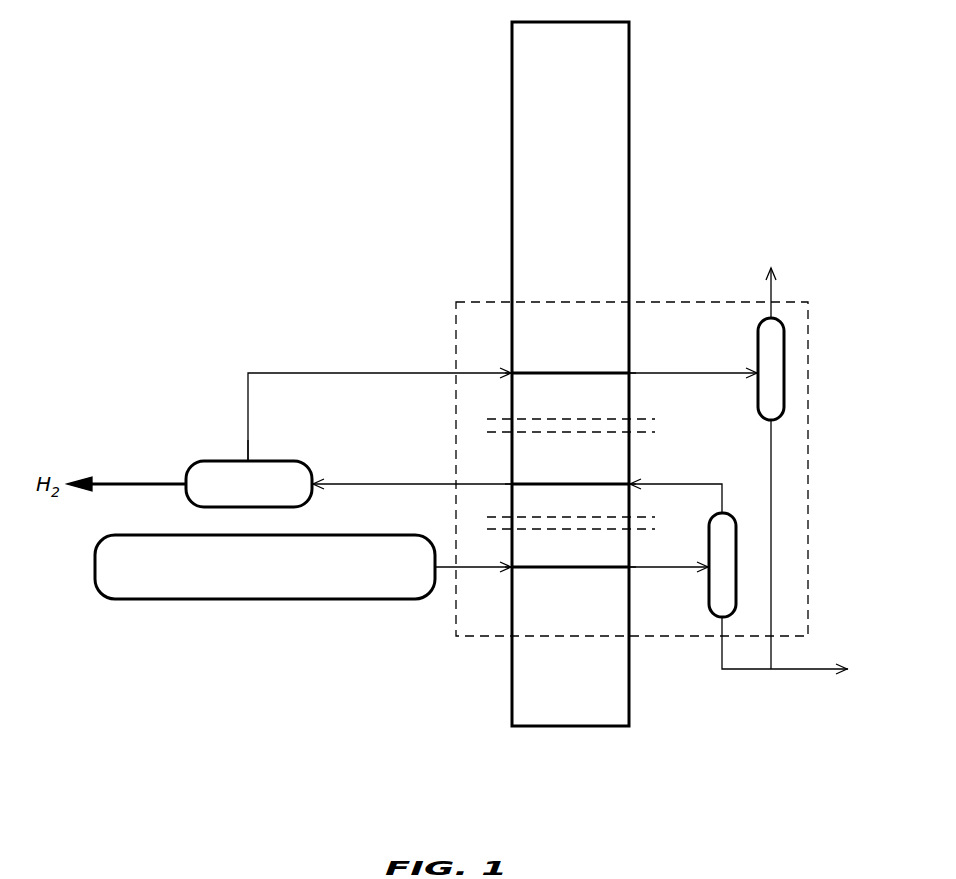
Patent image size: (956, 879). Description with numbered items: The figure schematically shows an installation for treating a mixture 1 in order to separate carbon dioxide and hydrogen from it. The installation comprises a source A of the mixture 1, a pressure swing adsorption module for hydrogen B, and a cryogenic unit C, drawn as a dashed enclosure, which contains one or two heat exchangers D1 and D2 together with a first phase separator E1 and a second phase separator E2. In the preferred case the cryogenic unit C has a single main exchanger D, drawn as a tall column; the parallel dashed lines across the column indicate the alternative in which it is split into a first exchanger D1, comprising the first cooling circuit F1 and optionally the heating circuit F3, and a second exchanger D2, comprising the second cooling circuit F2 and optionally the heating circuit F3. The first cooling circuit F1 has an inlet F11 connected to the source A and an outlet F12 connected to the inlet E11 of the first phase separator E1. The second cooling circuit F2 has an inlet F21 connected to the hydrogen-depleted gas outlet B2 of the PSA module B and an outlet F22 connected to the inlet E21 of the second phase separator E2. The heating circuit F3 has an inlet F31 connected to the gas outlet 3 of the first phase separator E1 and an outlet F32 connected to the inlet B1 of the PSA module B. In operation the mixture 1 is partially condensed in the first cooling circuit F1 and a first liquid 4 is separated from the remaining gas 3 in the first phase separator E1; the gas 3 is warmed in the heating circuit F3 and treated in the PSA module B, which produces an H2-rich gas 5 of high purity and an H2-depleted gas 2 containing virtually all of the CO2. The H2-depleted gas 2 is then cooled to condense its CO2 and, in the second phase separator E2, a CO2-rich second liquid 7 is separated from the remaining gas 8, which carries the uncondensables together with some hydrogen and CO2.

The mixture 1 is at (450, 570).
The hydrogen-depleted gas 2 is at (246, 384).
The gas 3 is at (723, 502).
The first liquid 4 is at (727, 673).
The H2-rich gas 5 is at (140, 478).
The second liquid 7 is at (772, 478).
The remaining gas 8 is at (772, 310).
The source A is at (265, 567).
The pressure swing adsorption module for hydrogen B is at (249, 484).
The inlet B1 is at (315, 476).
The hydrogen-depleted gas outlet B2 is at (246, 459).
The cryogenic unit C is at (810, 548).
The main exchanger D is at (560, 730).
The first exchanger D1 is at (570, 646).
The second exchanger D2 is at (570, 198).
The first phase separator E1 is at (725, 575).
The inlet of the first phase separator E11 is at (708, 567).
The second phase separator E2 is at (775, 372).
The inlet of the second phase separator E21 is at (757, 374).
The first cooling circuit F1 is at (545, 570).
The inlet of the first cooling circuit F11 is at (508, 568).
The outlet of the first cooling circuit F12 is at (631, 569).
The second cooling circuit F2 is at (555, 372).
The inlet of the second cooling circuit F21 is at (508, 372).
The outlet of the second cooling circuit F22 is at (631, 372).
The heating circuit F3 is at (555, 483).
The inlet of the heating circuit F31 is at (631, 483).
The outlet of the heating circuit F32 is at (508, 483).